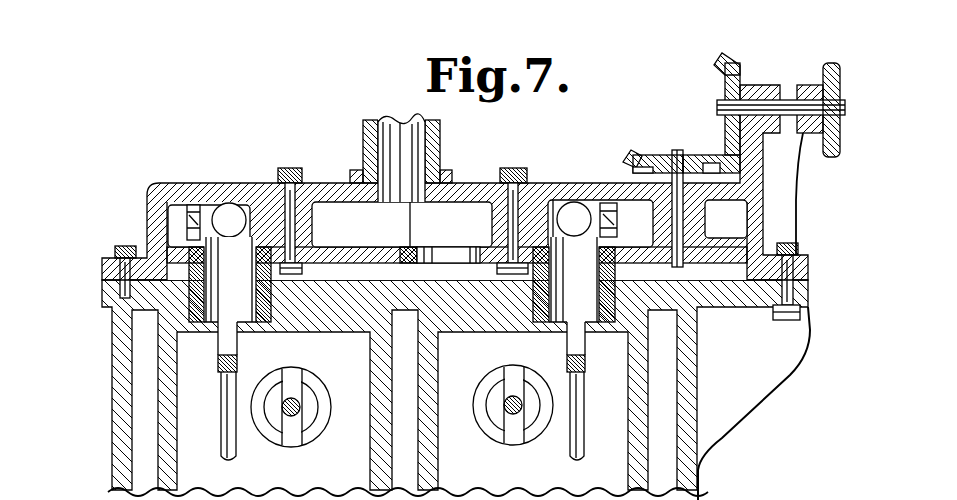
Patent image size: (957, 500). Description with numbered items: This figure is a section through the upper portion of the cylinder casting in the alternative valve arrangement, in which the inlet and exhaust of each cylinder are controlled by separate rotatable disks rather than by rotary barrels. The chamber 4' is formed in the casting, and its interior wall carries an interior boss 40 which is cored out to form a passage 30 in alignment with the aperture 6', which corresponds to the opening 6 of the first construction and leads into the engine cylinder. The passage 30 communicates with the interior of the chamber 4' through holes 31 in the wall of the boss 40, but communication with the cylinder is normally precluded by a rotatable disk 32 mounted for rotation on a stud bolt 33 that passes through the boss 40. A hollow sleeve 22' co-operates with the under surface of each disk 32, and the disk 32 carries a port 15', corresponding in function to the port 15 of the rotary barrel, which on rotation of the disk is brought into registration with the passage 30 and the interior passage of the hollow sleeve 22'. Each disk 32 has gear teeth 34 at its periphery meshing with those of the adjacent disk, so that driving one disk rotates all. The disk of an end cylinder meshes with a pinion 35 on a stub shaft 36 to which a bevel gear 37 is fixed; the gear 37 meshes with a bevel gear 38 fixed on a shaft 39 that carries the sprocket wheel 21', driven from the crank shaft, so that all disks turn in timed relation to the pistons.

The communicating opening 6 is at (454, 292).
The aperture 6' is at (446, 369).
The chamber 4' is at (457, 199).
The port 15 is at (402, 279).
The port 15' is at (448, 234).
The sprocket wheel 21' is at (830, 84).
The hollow sleeve 22' is at (403, 390).
The passage 30 is at (245, 208).
The hole 31 is at (225, 215).
The rotatable disk 32 is at (412, 237).
The stud bolt 33 is at (288, 168).
The gear teeth 34 is at (404, 250).
The pinion 35 is at (722, 242).
The stub shaft 36 is at (680, 152).
The bevel gear 37 is at (637, 152).
The bevel gear 38 is at (737, 63).
The shaft 39 is at (783, 100).
The interior boss 40 is at (312, 225).